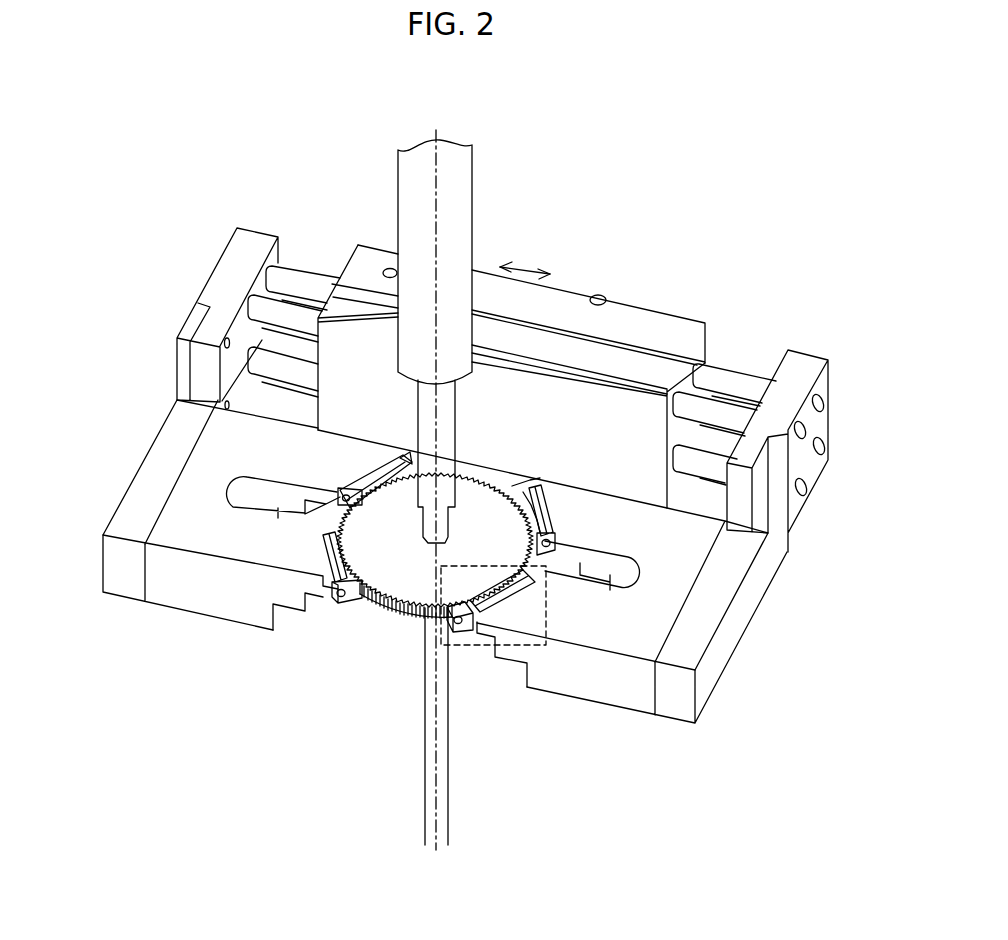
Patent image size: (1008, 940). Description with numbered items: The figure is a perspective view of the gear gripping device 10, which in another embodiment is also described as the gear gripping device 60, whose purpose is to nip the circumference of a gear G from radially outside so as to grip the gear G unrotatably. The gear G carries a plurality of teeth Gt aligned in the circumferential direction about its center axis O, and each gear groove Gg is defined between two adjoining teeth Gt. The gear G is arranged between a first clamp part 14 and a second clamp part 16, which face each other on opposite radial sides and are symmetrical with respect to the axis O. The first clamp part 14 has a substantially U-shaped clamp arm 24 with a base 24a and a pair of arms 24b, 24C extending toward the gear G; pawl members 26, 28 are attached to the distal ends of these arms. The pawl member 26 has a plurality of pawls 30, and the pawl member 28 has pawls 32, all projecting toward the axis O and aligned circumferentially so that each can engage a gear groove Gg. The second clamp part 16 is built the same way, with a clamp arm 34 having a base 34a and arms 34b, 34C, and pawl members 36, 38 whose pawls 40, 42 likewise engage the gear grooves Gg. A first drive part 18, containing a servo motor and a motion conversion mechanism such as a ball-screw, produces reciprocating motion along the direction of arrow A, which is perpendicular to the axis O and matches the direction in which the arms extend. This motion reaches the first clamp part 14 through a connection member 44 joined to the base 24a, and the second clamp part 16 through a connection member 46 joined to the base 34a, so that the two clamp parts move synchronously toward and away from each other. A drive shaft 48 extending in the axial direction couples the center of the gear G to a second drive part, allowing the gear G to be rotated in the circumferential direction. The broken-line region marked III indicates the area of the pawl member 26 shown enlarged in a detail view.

The gear gripping device 10 is at (722, 187).
The gear gripping device 60 is at (456, 478).
The first clamp part 14 is at (615, 720).
The second clamp part 16 is at (196, 616).
The first drive part 18 is at (612, 300).
The clamp arm 24 is at (673, 558).
The base 24a is at (675, 582).
The arm 24b is at (527, 615).
The arm 24C is at (585, 508).
The pawl member 26 is at (456, 622).
The pawl member 28 is at (523, 490).
The pawls 30 is at (478, 590).
The pawls 32 is at (526, 516).
The clamp arm 34 is at (207, 467).
The base 34a is at (183, 517).
The arm 34b is at (302, 565).
The arm 34C is at (336, 447).
The pawl member 36 is at (352, 602).
The pawl member 38 is at (405, 458).
The pawls 40 is at (355, 563).
The pawls 42 is at (372, 500).
The connection member 44 is at (800, 363).
The connection member 46 is at (250, 238).
The drive shaft 48 is at (398, 203).
The arrow A is at (528, 262).
The gear G is at (382, 610).
The teeth Gt is at (476, 476).
The gear grooves Gg is at (408, 612).
The center axis O is at (436, 135).
The detail view region III is at (560, 620).